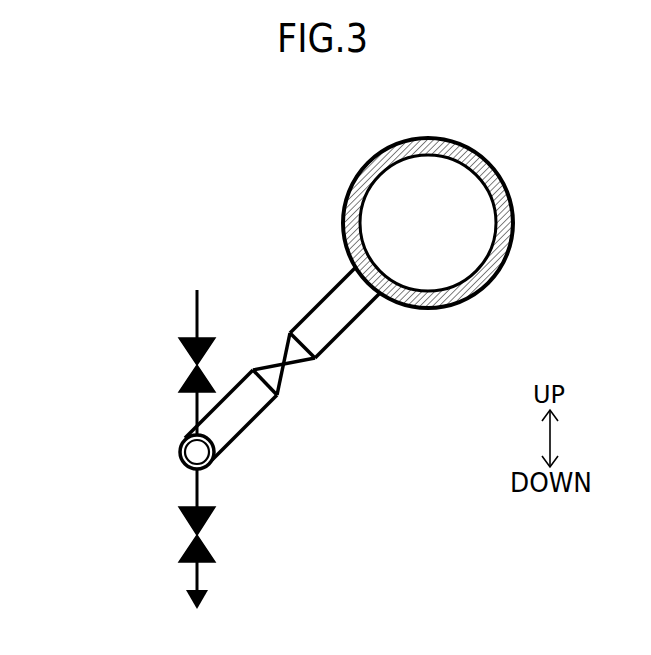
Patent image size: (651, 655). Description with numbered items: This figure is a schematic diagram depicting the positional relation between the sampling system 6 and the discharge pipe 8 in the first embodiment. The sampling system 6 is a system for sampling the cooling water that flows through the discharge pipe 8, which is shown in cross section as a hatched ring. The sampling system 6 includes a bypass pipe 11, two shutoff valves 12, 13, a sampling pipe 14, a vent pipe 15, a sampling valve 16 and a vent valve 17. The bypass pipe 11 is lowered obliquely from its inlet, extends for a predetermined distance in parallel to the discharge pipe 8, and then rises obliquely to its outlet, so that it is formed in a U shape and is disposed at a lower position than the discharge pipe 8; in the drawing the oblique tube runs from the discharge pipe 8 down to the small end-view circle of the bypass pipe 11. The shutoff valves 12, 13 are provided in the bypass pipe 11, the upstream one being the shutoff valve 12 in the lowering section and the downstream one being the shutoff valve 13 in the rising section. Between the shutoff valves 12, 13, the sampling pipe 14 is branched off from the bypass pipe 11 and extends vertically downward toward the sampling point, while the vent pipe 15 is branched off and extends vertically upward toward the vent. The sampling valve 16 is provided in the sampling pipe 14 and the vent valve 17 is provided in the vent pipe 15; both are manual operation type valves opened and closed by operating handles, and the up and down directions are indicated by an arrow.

The sampling system 6 is at (78, 318).
The discharge pipe 8 is at (428, 138).
The bypass pipe 11 is at (176, 452).
The shutoff valve 12 is at (282, 364).
The shutoff valve 13 is at (280, 378).
The sampling pipe 14 is at (197, 588).
The vent pipe 15 is at (197, 306).
The sampling valve 16 is at (191, 540).
The vent valve 17 is at (190, 362).